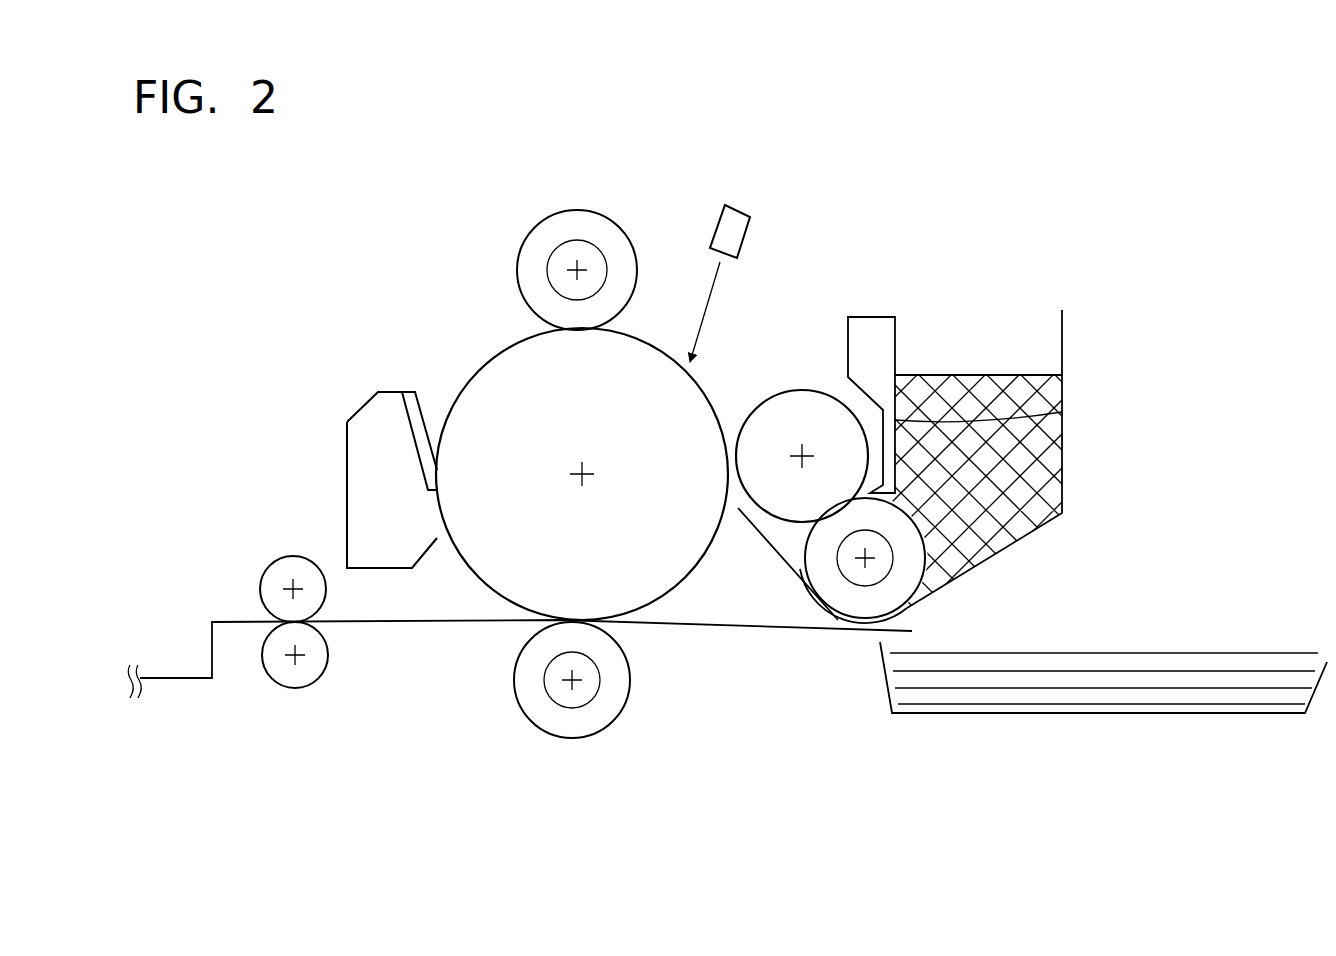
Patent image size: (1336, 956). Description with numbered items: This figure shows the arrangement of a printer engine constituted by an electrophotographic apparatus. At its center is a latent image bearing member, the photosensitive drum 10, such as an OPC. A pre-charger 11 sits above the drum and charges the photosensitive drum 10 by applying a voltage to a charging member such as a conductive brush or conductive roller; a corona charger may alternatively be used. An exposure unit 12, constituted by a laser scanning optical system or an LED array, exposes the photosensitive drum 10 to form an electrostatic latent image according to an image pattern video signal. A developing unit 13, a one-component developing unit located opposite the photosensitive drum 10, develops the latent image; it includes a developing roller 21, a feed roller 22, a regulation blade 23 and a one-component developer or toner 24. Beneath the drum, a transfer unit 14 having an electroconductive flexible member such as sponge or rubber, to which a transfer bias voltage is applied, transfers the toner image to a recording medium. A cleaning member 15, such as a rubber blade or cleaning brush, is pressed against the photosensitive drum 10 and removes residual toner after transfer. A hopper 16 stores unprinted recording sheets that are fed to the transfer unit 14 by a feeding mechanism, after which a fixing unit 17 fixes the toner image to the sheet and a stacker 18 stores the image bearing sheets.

The photosensitive drum 10 is at (657, 598).
The pre-charger 11 is at (610, 215).
The exposure unit 12 is at (745, 223).
The developing unit 13 is at (944, 493).
The transfer unit 14 is at (532, 720).
The cleaning member 15 is at (392, 568).
The hopper 16 is at (1117, 717).
The fixing unit 17 is at (277, 548).
The stacker 18 is at (175, 690).
The developing roller 21 is at (780, 523).
The feed roller 22 is at (960, 577).
The regulation blade 23 is at (1057, 407).
The one-component developer (toner) 24 is at (1047, 492).